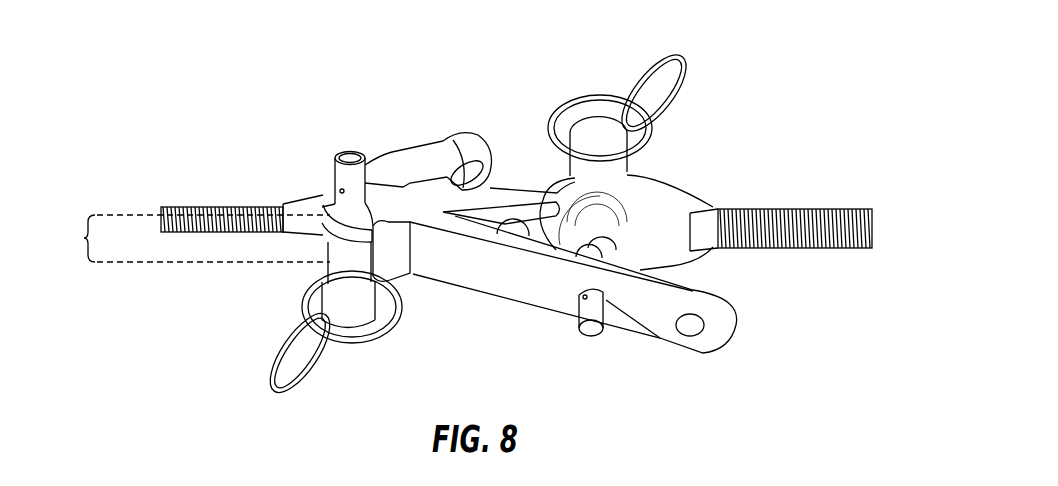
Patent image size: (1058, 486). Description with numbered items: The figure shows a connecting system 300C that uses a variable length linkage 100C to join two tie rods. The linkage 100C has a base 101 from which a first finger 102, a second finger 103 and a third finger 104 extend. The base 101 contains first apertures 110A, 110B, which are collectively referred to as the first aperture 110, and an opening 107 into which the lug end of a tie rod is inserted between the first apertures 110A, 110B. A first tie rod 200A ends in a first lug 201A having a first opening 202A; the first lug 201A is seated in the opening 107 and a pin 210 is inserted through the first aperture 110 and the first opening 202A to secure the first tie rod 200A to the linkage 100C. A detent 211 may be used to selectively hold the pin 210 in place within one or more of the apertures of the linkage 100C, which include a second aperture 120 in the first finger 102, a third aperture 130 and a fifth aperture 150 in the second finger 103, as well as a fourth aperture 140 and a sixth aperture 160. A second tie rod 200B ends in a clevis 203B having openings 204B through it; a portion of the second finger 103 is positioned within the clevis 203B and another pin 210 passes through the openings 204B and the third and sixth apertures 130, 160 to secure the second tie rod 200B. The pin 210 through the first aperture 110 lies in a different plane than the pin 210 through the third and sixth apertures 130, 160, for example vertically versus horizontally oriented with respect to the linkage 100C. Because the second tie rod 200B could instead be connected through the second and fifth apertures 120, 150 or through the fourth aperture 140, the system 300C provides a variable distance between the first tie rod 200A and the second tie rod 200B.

The connecting system 300C is at (157, 81).
The variable length linkage 100C is at (386, 153).
The base 101 is at (364, 156).
The first finger 102 is at (455, 140).
The second finger 103 is at (488, 190).
The third finger 104 is at (676, 292).
The opening 107 is at (288, 229).
The first aperture 110 is at (182, 238).
The first aperture 110A is at (336, 170).
The first aperture 110B is at (318, 262).
The second aperture 120 is at (486, 166).
The third aperture 130 is at (630, 183).
The fourth aperture 140 is at (703, 325).
The fifth aperture 150 is at (513, 234).
The sixth aperture 160 is at (612, 302).
The first tie rod 200A is at (178, 207).
The second tie rod 200B is at (853, 210).
The first lug 201A is at (322, 208).
The first opening 202A is at (318, 242).
The clevis 203B is at (605, 239).
The openings 204B is at (583, 257).
The pin 210 is at (360, 292).
The detent 211 is at (340, 190).